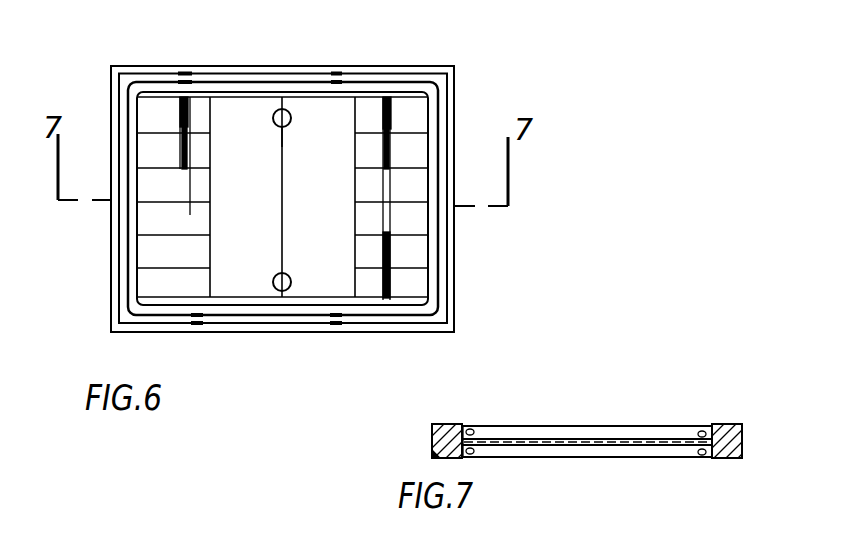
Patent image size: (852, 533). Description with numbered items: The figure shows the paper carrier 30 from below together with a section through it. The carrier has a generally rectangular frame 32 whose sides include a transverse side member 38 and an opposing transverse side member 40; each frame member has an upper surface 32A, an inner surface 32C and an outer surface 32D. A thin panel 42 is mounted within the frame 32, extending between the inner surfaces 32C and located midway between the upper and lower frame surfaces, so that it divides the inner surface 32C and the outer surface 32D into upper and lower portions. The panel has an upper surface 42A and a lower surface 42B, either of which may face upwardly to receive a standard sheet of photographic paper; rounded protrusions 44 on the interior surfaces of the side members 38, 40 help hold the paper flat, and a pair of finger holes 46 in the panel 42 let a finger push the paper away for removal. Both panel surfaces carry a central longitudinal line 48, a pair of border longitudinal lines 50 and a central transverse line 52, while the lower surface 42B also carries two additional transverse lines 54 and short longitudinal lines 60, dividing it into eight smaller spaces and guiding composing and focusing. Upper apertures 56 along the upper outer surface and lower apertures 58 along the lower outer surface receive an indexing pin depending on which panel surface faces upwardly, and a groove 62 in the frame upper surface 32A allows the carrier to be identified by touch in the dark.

In FIG. 7, the paper carrier 30 is at (685, 367).
In FIG. 7, the frame 32 is at (637, 462).
In FIG. 6, the upper surface 32A is at (452, 324).
In FIG. 6, the inner surface 32C is at (142, 100).
In FIG. 7, the inner surface 32C is at (670, 433).
In FIG. 6, the outer surface 32D is at (315, 66).
In FIG. 7, the outer surface 32D is at (742, 444).
In FIG. 6, the transverse side member 38 is at (448, 283).
In FIG. 6, the opposing transverse side member 40 is at (141, 268).
In FIG. 7, the panel 42 is at (605, 441).
In FIG. 7, the upper surface of panel 42A is at (548, 425).
In FIG. 6, the lower surface of panel 42B is at (268, 258).
In FIG. 7, the lower surface of panel 42B is at (553, 459).
In FIG. 6, the protrusions 44 is at (455, 84).
In FIG. 7, the protrusions 44 is at (492, 425).
In FIG. 6, the finger holes 46 is at (282, 109).
In FIG. 6, the central longitudinal line 48 is at (297, 197).
In FIG. 6, the border longitudinal lines 50 is at (368, 102).
In FIG. 6, the central transverse line 52 is at (282, 147).
In FIG. 6, the additional transverse lines 54 is at (212, 173).
In FIG. 7, the upper apertures 56 is at (437, 428).
In FIG. 7, the lower apertures 58 is at (435, 448).
In FIG. 6, the short longitudinal lines 60 is at (160, 243).
In FIG. 6, the groove 62 is at (405, 322).
In FIG. 7, the groove 62 is at (452, 423).